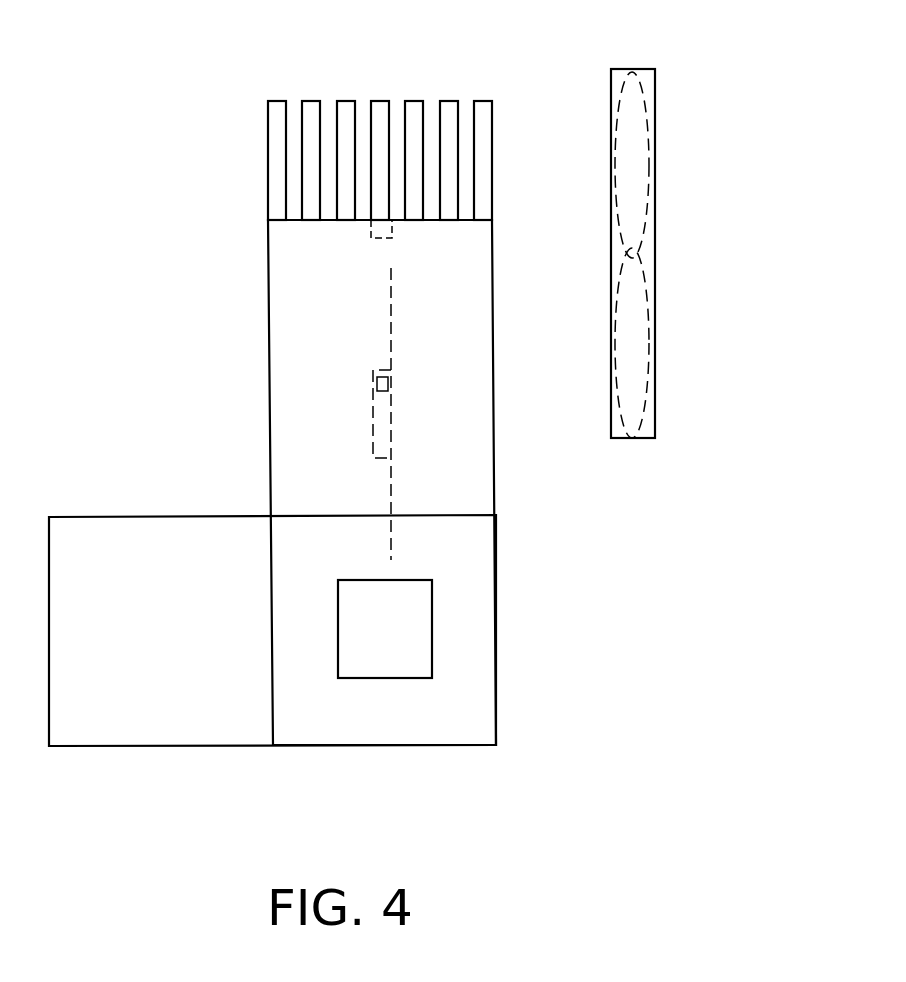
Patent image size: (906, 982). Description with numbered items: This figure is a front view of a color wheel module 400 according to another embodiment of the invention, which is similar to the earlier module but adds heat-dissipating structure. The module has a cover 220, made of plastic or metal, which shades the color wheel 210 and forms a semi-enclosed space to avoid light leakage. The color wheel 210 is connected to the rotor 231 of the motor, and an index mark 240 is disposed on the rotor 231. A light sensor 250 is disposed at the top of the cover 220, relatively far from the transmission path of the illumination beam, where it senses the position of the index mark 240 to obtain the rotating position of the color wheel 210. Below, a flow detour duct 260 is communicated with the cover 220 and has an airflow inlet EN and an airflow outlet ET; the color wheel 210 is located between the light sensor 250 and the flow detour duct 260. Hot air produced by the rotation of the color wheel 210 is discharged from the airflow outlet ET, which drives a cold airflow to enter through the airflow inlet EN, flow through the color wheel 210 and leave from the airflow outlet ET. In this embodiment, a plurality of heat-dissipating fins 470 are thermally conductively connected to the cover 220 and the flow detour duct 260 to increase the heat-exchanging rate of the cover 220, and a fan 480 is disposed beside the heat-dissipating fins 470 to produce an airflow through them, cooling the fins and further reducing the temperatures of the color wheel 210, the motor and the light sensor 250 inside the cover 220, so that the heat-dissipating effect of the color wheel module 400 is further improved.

The color wheel module 400 is at (729, 168).
The heat-dissipating fins 470 is at (488, 152).
The cover 220 is at (268, 275).
The light sensor 250 is at (392, 238).
The color wheel 210 is at (391, 495).
The rotor 231 is at (391, 430).
The index mark 240 is at (390, 383).
The flow detour duct 260 is at (327, 666).
The fan 480 is at (642, 69).
The airflow inlet EN is at (150, 630).
The airflow outlet ET is at (387, 630).